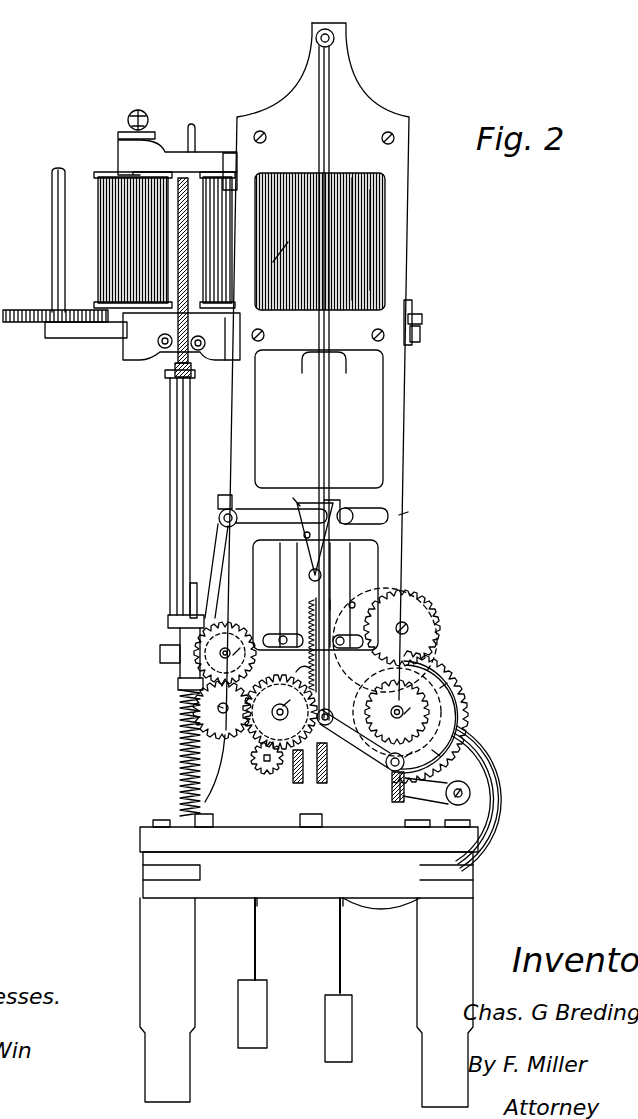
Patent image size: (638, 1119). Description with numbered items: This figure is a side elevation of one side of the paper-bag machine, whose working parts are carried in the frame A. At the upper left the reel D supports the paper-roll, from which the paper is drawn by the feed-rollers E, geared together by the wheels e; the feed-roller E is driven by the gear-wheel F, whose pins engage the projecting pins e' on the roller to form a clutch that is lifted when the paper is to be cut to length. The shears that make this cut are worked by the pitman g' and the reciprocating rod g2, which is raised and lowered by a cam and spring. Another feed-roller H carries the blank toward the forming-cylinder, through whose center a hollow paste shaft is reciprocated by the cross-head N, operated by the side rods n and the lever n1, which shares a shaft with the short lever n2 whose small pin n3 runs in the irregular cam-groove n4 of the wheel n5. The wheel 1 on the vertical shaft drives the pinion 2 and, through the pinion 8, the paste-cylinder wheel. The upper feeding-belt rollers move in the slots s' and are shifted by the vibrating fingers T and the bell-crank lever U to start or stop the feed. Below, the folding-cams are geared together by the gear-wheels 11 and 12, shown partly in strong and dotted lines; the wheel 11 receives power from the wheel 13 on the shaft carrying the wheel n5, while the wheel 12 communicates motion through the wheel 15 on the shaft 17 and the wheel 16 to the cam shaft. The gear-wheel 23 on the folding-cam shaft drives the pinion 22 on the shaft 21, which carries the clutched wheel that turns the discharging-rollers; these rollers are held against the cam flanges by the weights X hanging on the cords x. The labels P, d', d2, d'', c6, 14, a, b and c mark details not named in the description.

The frame A is at (236, 411).
The cross-head N is at (336, 40).
The reel D is at (50, 240).
The feed-roller E is at (133, 240).
The gear-wheel F is at (104, 172).
The feed-roller H is at (217, 240).
The wheels e is at (121, 329).
The projecting pins e' is at (187, 277).
The pitman g' is at (175, 492).
The reciprocating rod g2 is at (201, 434).
The wheel 1 is at (422, 321).
The vertical rod P is at (409, 505).
The vibrating fingers T is at (313, 534).
The bell-crank lever U is at (272, 511).
The slots s' is at (356, 512).
The side rods n is at (328, 597).
The pinion 8 is at (352, 602).
The gear-wheel 11 is at (216, 571).
The rack d' is at (273, 645).
The post d2 is at (192, 589).
The pawl d'' is at (302, 661).
The wheel 16 is at (225, 653).
The hub c6 is at (234, 658).
The shaft 17 is at (218, 708).
The wheel 15 is at (222, 710).
The gear-wheel 23 is at (280, 712).
The pinion 22 is at (261, 758).
The shaft 21 is at (266, 768).
The gear-wheel 12 is at (296, 696).
The wheel 13 is at (387, 672).
The shaft 14 is at (407, 718).
The lever n1 is at (348, 746).
The short lever n2 is at (415, 748).
The small pin n3 is at (433, 746).
The cam-groove n4 is at (439, 694).
The wheel n5 is at (458, 684).
The pinion 2 is at (422, 817).
The cords x is at (303, 945).
The weights X is at (295, 1021).
The slot a is at (359, 240).
The slot b is at (358, 239).
The slot c is at (276, 221).